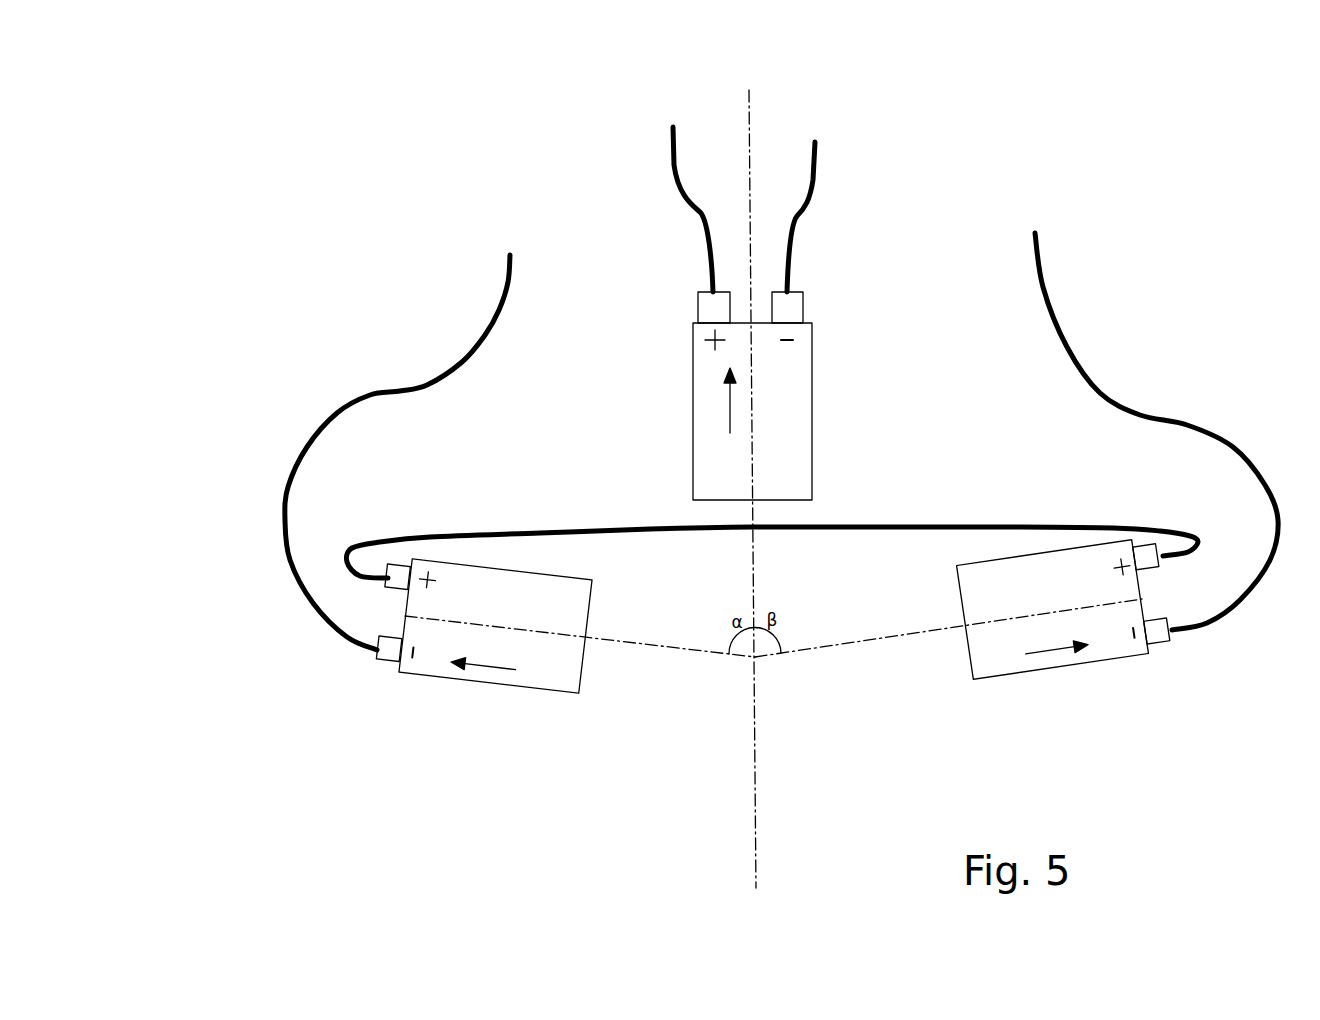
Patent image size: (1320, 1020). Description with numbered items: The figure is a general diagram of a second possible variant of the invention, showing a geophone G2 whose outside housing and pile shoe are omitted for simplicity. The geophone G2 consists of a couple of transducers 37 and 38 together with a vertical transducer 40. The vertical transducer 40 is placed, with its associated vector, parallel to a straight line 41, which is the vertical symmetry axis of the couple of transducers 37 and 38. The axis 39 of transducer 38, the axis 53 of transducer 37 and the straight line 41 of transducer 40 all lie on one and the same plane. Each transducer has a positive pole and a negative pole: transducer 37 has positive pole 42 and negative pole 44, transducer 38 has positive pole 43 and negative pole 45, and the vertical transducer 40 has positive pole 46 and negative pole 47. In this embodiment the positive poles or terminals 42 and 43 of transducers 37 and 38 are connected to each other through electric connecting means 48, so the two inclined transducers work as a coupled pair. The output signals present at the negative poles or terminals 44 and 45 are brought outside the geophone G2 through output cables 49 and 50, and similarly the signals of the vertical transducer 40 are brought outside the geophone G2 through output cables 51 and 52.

The transducer 37 is at (987, 658).
The transducer 38 is at (557, 670).
The axis 39 is at (650, 647).
The vertical transducer 40 is at (792, 442).
The straight line 41 is at (752, 127).
The positive pole 42 is at (1150, 552).
The positive pole 43 is at (393, 560).
The negative pole 44 is at (1157, 645).
The negative pole 45 is at (388, 653).
The positive pole 46 is at (713, 312).
The negative pole 47 is at (792, 307).
The electric connecting means 48 is at (622, 527).
The output cable 49 is at (360, 392).
The output cable 50 is at (1057, 317).
The output cable 51 is at (673, 163).
The output cable 52 is at (818, 158).
The axis 53 is at (815, 647).
The geophone G2 is at (366, 151).